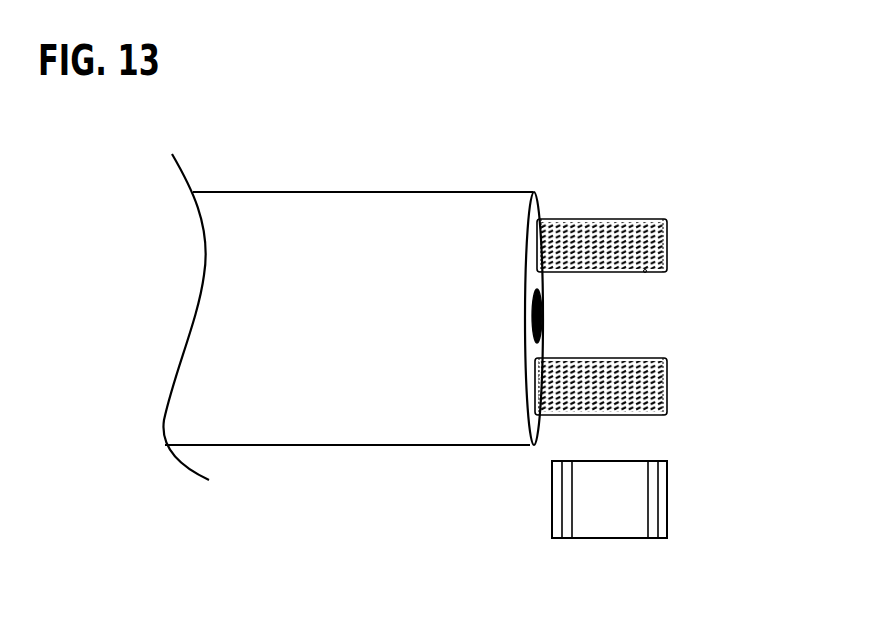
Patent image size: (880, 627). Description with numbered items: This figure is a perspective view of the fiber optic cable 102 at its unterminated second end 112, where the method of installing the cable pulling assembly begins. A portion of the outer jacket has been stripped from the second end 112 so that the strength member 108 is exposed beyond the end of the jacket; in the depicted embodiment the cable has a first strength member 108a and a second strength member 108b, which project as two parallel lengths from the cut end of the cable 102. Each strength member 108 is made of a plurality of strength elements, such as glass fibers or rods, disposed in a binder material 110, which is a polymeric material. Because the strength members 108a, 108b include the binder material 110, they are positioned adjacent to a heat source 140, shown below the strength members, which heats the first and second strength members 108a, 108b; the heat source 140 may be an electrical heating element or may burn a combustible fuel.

The fiber optic cable 102 is at (354, 154).
The strength member 108 is at (644, 228).
The first strength member 108a is at (653, 348).
The second strength member 108b is at (650, 198).
The binder material 110 is at (643, 275).
The second end 112 is at (362, 446).
The heat source 140 is at (663, 503).